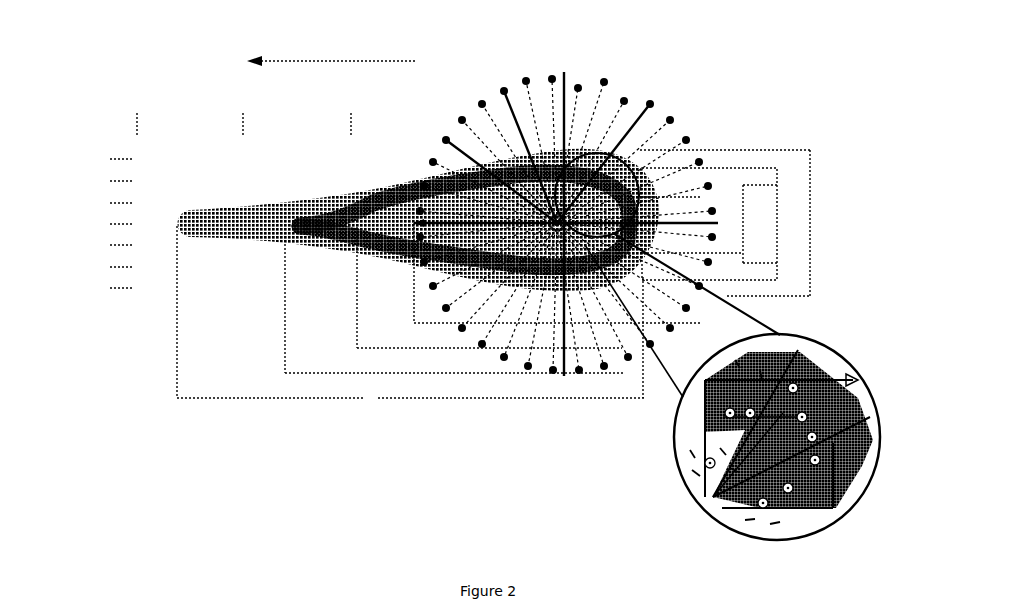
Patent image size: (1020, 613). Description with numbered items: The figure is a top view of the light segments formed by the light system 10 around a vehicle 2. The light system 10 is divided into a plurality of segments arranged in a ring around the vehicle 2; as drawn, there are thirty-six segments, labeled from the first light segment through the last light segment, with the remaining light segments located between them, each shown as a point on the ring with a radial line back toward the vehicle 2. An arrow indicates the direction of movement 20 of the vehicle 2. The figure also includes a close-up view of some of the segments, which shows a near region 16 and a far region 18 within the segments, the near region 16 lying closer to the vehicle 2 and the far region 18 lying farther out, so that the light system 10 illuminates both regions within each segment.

The vehicle 2 is at (566, 198).
The light system 10 is at (558, 72).
The near region 16 is at (713, 497).
The far region 18 is at (837, 443).
The direction of movement 20 is at (327, 62).